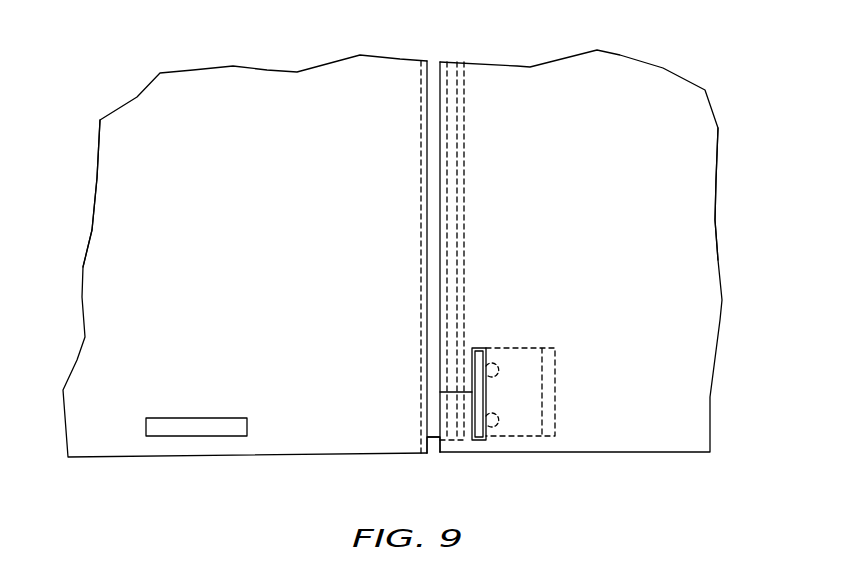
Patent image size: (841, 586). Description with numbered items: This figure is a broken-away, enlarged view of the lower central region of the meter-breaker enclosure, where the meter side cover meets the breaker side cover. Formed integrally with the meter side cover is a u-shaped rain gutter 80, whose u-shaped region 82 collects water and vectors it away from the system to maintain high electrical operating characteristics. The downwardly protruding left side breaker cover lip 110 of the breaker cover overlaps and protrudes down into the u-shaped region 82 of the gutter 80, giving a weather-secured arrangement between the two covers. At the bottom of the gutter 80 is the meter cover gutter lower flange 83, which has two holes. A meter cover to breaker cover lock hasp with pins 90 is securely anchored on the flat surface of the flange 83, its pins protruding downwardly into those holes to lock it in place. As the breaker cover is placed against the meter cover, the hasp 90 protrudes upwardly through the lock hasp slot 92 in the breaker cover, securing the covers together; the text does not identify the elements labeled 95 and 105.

The u-shaped rain gutter 80 is at (433, 72).
The u-shaped region of the gutter 82 is at (433, 442).
The meter cover gutter lower flange 83 is at (542, 402).
The meter cover to breaker cover lock hasp with pins 90 is at (486, 403).
The meter cover to breaker cover lock hasp slot 92 is at (440, 392).
The fasteners 95 is at (486, 384).
The handle recess 105 is at (291, 458).
The left side breaker cover lip 110 is at (438, 275).